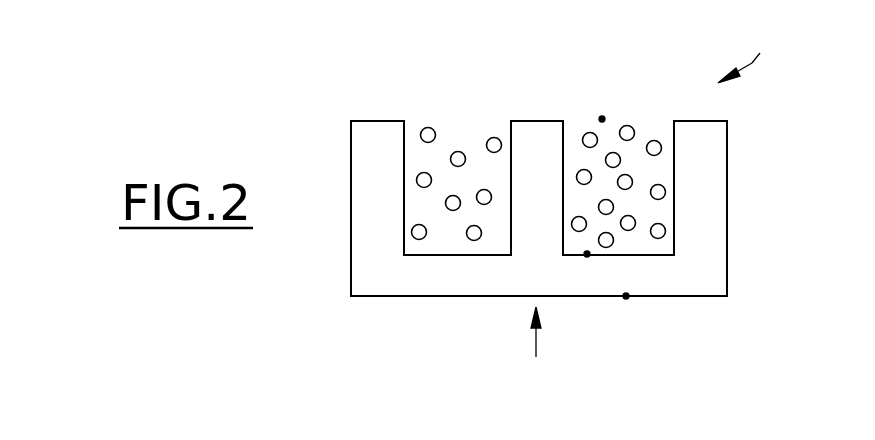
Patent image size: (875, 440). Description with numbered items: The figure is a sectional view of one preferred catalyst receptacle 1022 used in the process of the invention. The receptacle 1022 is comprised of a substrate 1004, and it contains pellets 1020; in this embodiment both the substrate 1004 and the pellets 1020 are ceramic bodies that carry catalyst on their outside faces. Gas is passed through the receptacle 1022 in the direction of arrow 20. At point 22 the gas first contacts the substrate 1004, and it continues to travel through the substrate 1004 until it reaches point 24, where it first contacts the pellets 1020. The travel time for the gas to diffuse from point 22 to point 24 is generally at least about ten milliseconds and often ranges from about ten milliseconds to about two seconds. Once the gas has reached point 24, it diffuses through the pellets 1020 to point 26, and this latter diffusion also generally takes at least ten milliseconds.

The substrate 1004 is at (702, 230).
The pellets 1020 is at (459, 152).
The receptacle 1022 is at (760, 53).
The point 26 is at (603, 118).
The point 24 is at (587, 255).
The point 22 is at (626, 296).
The arrow 20 is at (536, 348).